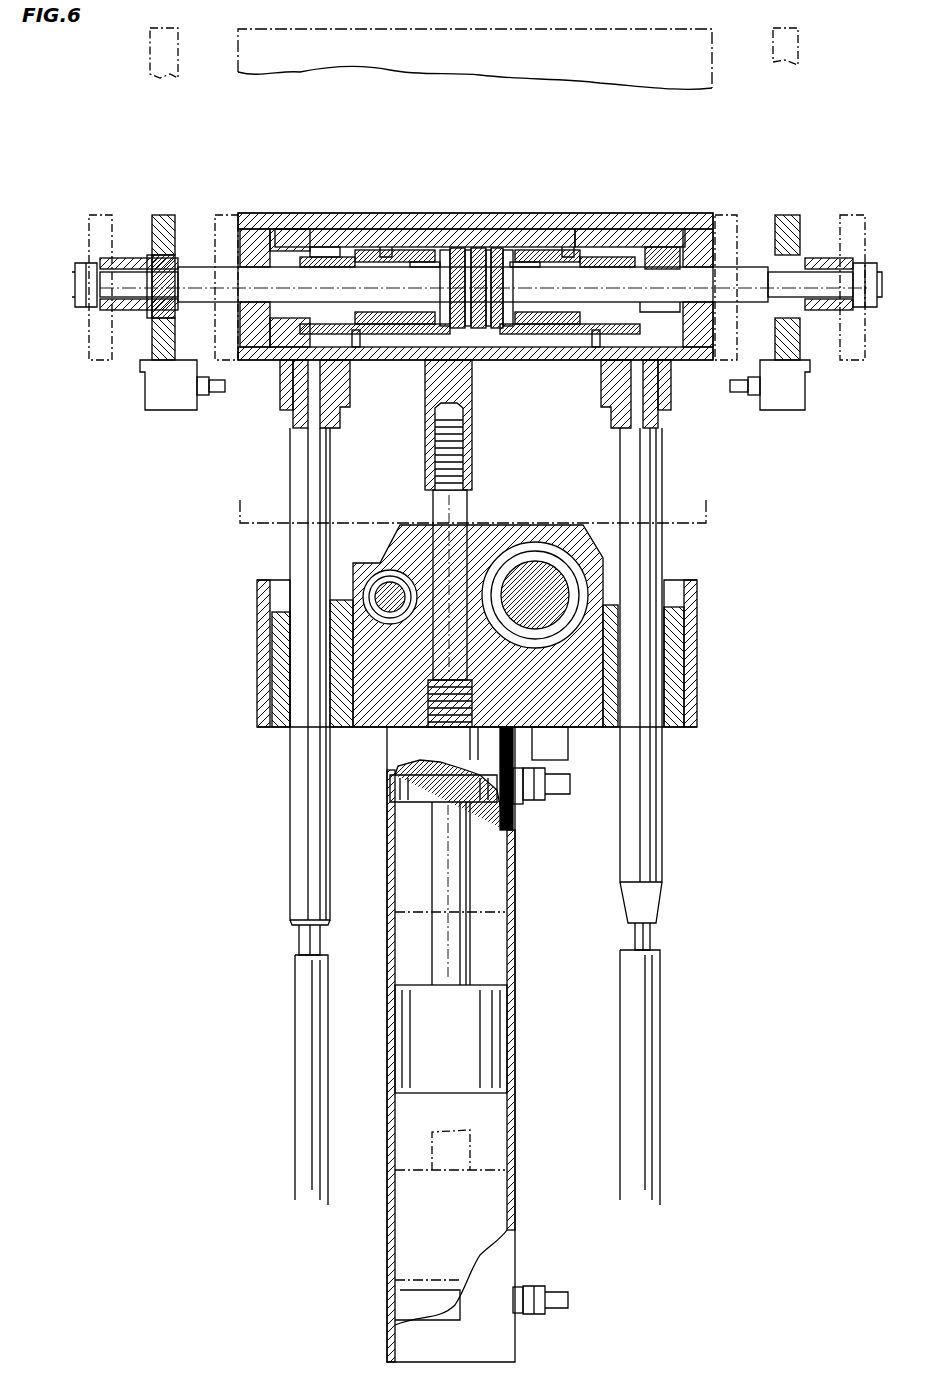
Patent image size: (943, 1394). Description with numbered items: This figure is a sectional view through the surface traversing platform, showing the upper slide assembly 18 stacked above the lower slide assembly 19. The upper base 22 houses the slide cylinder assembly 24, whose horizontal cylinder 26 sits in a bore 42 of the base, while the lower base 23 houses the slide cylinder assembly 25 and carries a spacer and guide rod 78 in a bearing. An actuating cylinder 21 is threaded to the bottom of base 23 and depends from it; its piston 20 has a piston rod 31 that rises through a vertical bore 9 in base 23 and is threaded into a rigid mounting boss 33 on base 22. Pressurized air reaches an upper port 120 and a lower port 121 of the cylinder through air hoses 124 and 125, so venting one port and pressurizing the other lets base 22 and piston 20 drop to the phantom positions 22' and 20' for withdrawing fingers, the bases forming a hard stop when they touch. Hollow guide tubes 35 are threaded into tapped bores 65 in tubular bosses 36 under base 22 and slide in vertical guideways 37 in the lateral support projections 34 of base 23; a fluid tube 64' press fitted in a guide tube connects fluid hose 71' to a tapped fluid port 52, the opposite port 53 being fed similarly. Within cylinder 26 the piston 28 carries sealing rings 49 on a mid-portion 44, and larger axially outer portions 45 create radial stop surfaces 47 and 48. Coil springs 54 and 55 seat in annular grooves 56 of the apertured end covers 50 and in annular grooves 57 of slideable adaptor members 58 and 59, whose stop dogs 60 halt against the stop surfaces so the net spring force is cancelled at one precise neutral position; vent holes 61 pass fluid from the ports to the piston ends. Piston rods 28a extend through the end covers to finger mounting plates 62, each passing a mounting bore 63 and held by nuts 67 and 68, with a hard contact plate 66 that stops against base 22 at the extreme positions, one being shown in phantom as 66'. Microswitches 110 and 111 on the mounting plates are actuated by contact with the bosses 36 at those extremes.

The vertical bore 9 is at (470, 555).
The slide assembly 18 is at (668, 213).
The slide assembly 19 is at (700, 600).
The piston 20 is at (451, 1044).
The piston (phantom lower position) 20' is at (478, 1146).
The actuating cylinder 21 is at (455, 756).
The base housing 22 is at (475, 201).
The base (phantom lower position) 22' is at (503, 526).
The base housing 23 is at (698, 660).
The slide cylinder assembly 24 is at (432, 232).
The slide cylinder assembly 25 is at (555, 525).
The cylinder 26 is at (500, 235).
The piston 28 is at (480, 248).
The piston rod 28a is at (195, 267).
The piston rod 31 is at (455, 952).
The mounting boss 33 is at (472, 392).
The support projection 34 is at (262, 657).
The guide tube 35 is at (290, 840).
The tubular boss 36 is at (345, 402).
The vertical guideway 37 is at (288, 580).
The bore 42 is at (348, 229).
The cylinder mid-portion 44 is at (545, 347).
The axially outer portion 45 is at (357, 347).
The radial stop surface 47 is at (385, 247).
The radial stop surface 48 is at (568, 247).
The sealing ring 49 is at (465, 250).
The cylinder end cover 50 is at (258, 229).
The tapped fluid port 52 is at (360, 329).
The tapped fluid port 53 is at (622, 335).
The coil spring 54 is at (292, 232).
The coil spring 55 is at (678, 247).
The annular groove 56 is at (670, 302).
The annular groove 57 is at (540, 268).
The adaptor member 58 is at (368, 265).
The adaptor member 59 is at (592, 268).
The stop dog 60 is at (365, 256).
The vent hole 61 is at (425, 267).
The finger mounting plate 62 is at (126, 258).
The mounting bore 63 is at (138, 310).
The fluid tube 64' is at (273, 401).
The tapped bore 65 is at (282, 378).
The hard contact plate 66 is at (485, 266).
The contact plate (phantom position) 66' is at (543, 266).
The nut 67 is at (80, 302).
The nut 68 is at (178, 302).
The fluid hose 71' is at (293, 1065).
The spacer and guide rod 78 is at (388, 582).
The microswitch 110 is at (182, 399).
The microswitch 111 is at (800, 399).
The upper port 120 is at (520, 802).
The lower port 121 is at (523, 1290).
The air hose 124 is at (568, 786).
The air hose 125 is at (565, 1292).